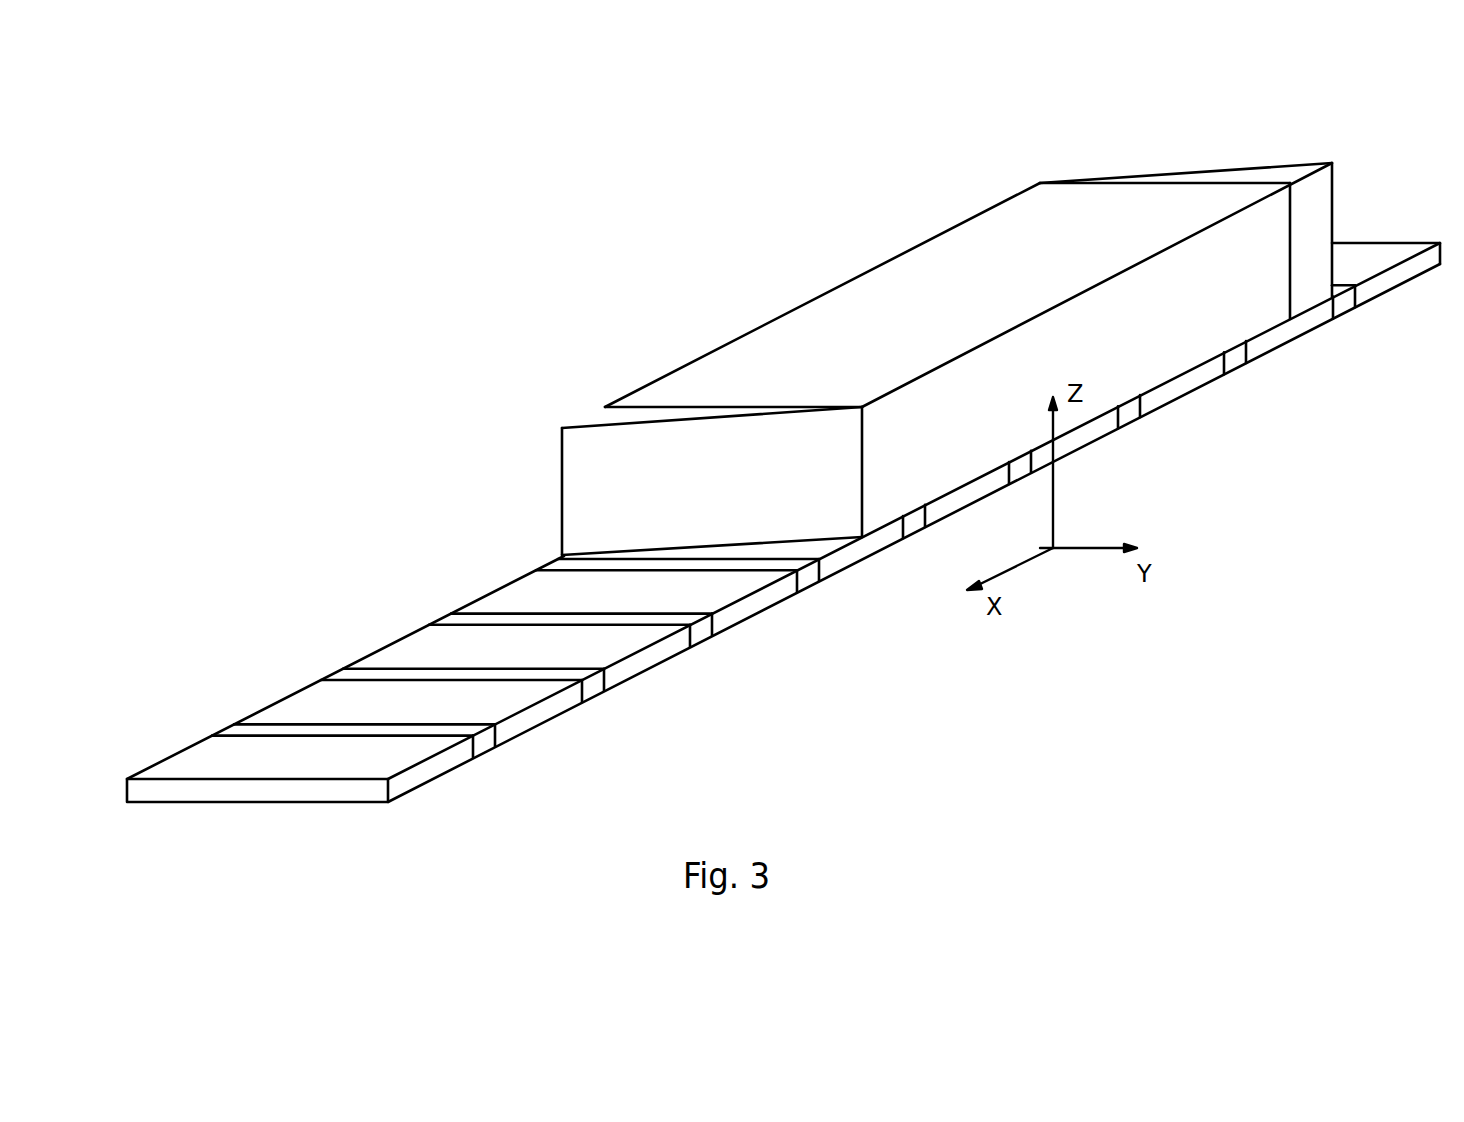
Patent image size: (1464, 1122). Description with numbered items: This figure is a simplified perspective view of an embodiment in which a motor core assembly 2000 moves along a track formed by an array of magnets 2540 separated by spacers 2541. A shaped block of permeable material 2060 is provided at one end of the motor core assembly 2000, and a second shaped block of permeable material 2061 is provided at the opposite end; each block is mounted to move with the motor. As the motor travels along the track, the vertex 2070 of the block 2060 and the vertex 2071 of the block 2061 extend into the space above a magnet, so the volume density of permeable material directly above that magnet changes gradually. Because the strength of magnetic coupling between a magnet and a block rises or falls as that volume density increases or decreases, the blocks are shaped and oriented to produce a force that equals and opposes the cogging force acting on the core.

The motor core assembly 2000 is at (868, 311).
The shaped block of permeable material 2060 is at (600, 413).
The shaped block of permeable material 2061 is at (1305, 280).
The vertex 2070 is at (560, 428).
The vertex 2071 is at (1332, 163).
The magnets 2540 is at (745, 612).
The spacers 2541 is at (592, 690).